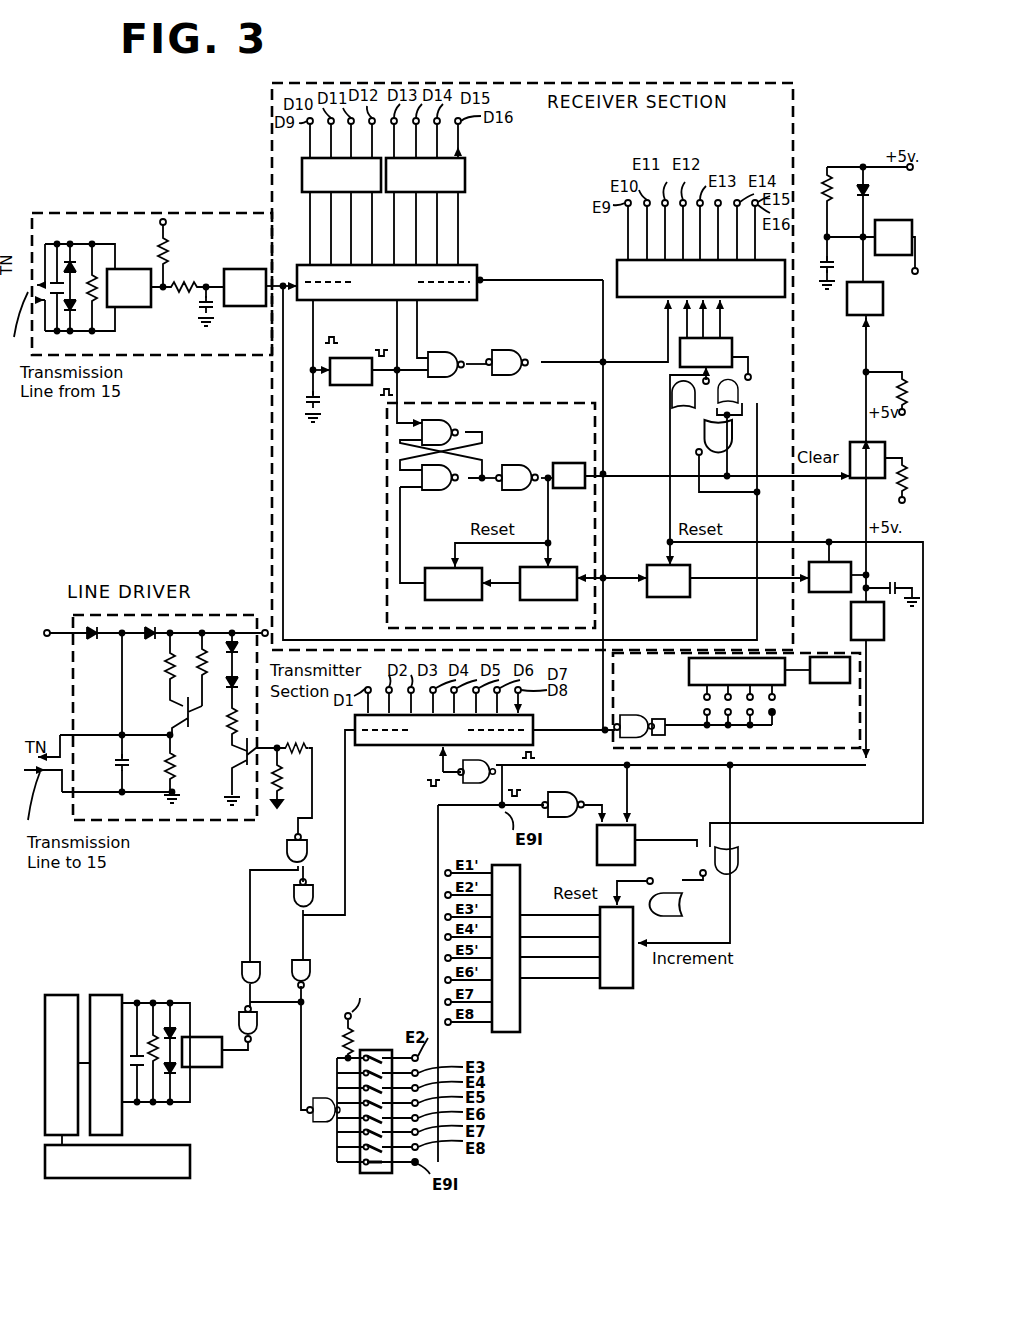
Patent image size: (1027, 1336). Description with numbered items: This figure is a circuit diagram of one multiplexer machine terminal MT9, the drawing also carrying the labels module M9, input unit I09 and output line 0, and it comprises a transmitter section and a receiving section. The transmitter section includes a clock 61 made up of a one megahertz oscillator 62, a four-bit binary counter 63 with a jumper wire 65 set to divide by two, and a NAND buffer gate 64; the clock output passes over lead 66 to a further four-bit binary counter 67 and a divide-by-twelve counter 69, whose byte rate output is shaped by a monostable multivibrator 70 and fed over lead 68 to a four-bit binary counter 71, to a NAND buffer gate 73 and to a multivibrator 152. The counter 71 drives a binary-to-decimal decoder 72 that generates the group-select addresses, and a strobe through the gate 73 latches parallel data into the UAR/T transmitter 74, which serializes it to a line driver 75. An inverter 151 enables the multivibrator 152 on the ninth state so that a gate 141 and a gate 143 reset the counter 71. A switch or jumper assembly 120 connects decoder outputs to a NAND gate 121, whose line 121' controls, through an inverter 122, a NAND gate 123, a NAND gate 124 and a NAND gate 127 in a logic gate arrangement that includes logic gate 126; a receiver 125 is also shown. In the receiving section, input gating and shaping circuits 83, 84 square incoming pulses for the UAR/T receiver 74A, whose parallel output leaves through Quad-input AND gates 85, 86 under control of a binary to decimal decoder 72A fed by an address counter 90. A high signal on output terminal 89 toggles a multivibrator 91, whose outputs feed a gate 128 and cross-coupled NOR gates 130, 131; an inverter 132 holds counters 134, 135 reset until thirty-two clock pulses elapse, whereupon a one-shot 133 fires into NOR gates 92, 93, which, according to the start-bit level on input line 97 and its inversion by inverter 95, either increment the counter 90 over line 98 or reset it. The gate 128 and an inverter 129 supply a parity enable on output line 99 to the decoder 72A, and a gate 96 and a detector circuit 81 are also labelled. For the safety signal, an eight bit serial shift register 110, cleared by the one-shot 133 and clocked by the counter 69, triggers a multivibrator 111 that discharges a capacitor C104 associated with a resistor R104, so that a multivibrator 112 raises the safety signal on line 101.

The input gating and shaping circuit 83 is at (82, 290).
The input gating and shaping circuit 84 is at (208, 272).
The Quad-input AND gate 85 is at (341, 211).
The Quad-input AND gate 86 is at (425, 211).
The UAR/T receiver 74A is at (387, 282).
The binary to decimal decoder 72A is at (701, 278).
The input line 97 is at (292, 305).
The output terminal 89 is at (313, 308).
The multivibrator 91 is at (358, 385).
The gate 128 is at (458, 350).
The inverter 129 is at (520, 350).
The output line 99 is at (572, 362).
The address counter 90 is at (706, 352).
The line 98 is at (740, 342).
The gate 96 is at (724, 386).
The NOR gate 93 is at (768, 348).
The NOR gate 92 is at (695, 397).
The inverter 95 is at (690, 433).
The detector circuit 81 is at (603, 430).
The NOR gate 130 is at (455, 420).
The NOR gate 131 is at (445, 492).
The inverter 132 is at (522, 492).
The one-shot 133 is at (575, 463).
The counter 134 is at (450, 600).
The counter 135 is at (548, 600).
The lead 66 is at (625, 585).
The 4-bit binary counter 67 is at (672, 597).
The divide-by-12 counter 69 is at (822, 585).
The monostable multivibrator 70 is at (851, 622).
The eight bit serial shift register 110 is at (852, 440).
The line 101 is at (886, 296).
The multivibrator 111 is at (850, 317).
The multivibrator 112 is at (883, 225).
The resistor R104 is at (810, 192).
The capacitor C104 is at (822, 264).
The clock 61 is at (642, 691).
The 1 MHZ oscillator 62 is at (830, 670).
The 4-bit binary counter 63 is at (737, 671).
The NAND buffer gate 64 is at (634, 718).
The jumper wire 65 is at (775, 700).
The lead 68 is at (857, 762).
The UAR/T transmitter 74 is at (444, 730).
The NAND buffer gate 73 is at (482, 786).
The inverter 151 is at (570, 792).
The multivibrator 152 is at (594, 846).
The binary-to-decimal decoder 72 is at (506, 1032).
The 4-bit binary counter 71 is at (618, 988).
The gate 141 is at (693, 859).
The gate 143 is at (681, 898).
The line driver 75 is at (154, 706).
The NAND gate 124 is at (285, 850).
The NAND gate 123 is at (294, 895).
The inverter 122 is at (310, 966).
The line 121' is at (335, 996).
The NAND gate 127 is at (243, 970).
The logic gate 126 is at (257, 1025).
The receiver 125 is at (205, 1060).
The NAND gate 121 is at (310, 1124).
The switch or jumper assembly 120 is at (380, 1050).
The output line 0 is at (347, 830).
The input unit I09 is at (67, 1070).
The machine terminal MT9 is at (106, 1065).
The module M9 is at (117, 1161).